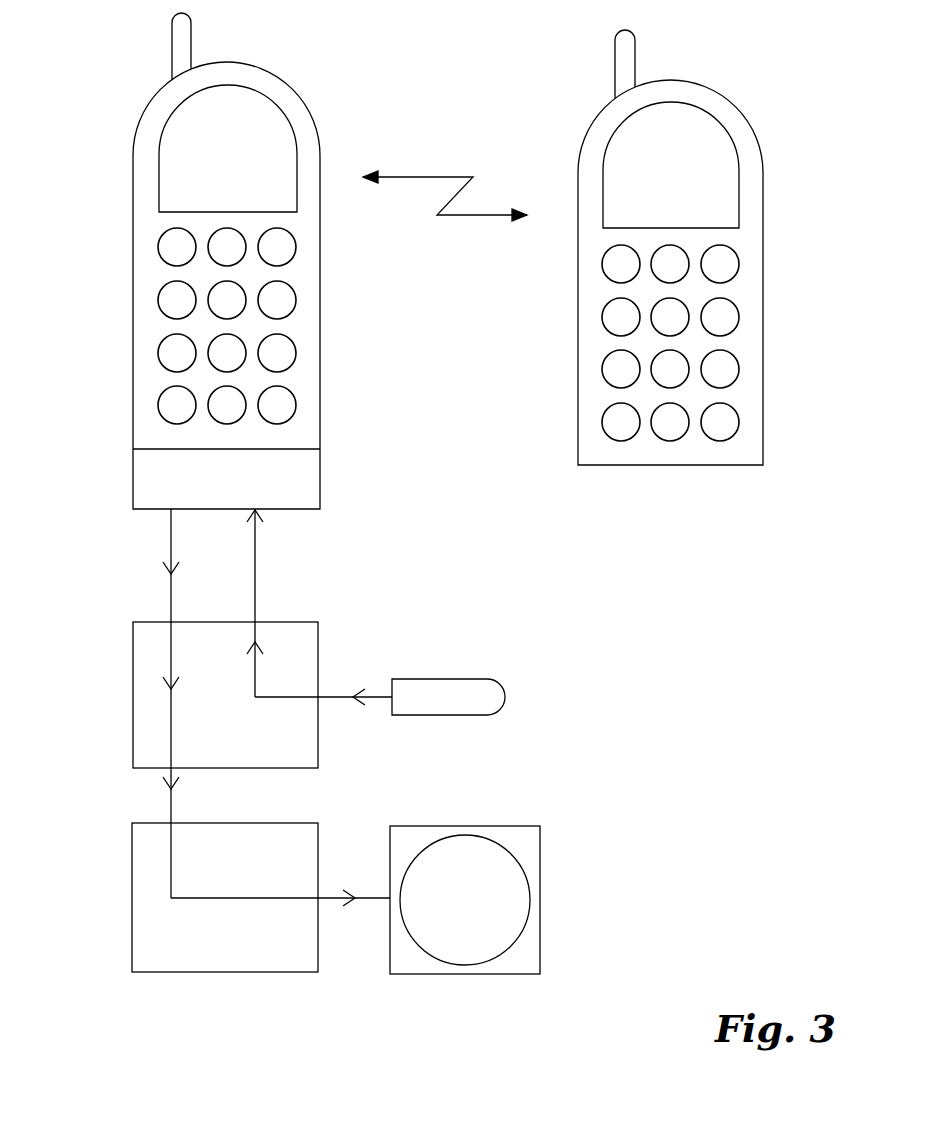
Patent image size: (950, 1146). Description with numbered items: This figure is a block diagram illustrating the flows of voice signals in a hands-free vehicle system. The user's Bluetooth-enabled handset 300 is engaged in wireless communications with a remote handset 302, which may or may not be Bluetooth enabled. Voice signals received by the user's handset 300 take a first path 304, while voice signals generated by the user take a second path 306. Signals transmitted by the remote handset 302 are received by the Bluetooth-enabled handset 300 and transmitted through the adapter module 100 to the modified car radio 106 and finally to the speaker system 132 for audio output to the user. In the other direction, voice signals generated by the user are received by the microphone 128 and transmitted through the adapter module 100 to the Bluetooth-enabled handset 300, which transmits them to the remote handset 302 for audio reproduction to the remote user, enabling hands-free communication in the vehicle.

The Bluetooth-enabled handset 300 is at (133, 256).
The remote handset 302 is at (763, 270).
The first path 304 is at (171, 532).
The second path 306 is at (255, 590).
The adapter module 100 is at (133, 697).
The modified car radio 106 is at (132, 900).
The microphone 128 is at (505, 697).
The speaker system 132 is at (465, 974).